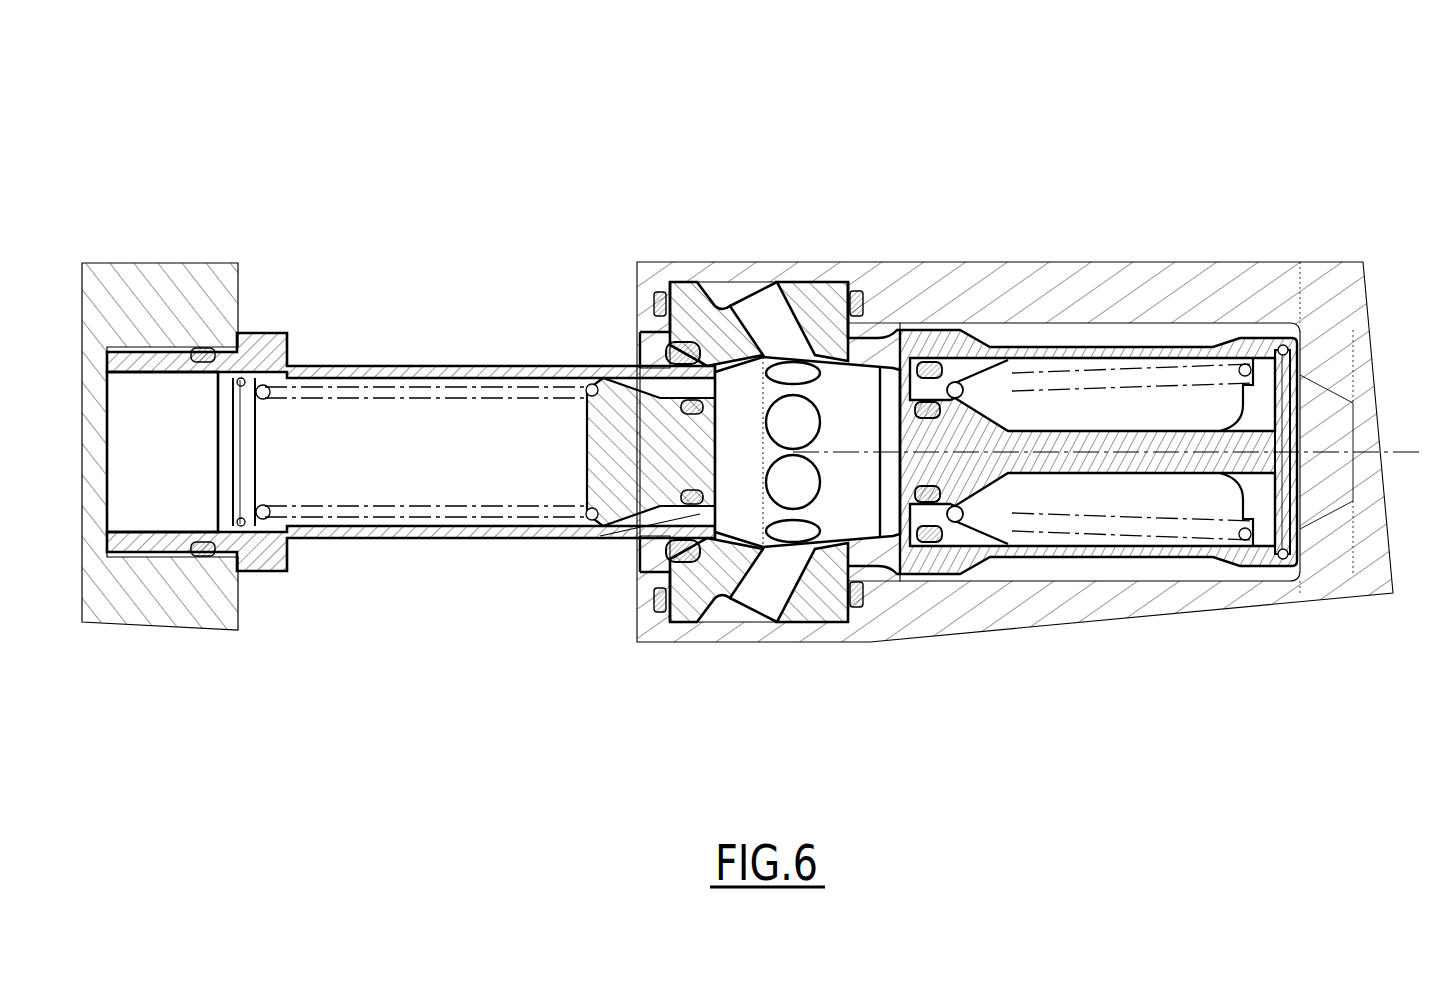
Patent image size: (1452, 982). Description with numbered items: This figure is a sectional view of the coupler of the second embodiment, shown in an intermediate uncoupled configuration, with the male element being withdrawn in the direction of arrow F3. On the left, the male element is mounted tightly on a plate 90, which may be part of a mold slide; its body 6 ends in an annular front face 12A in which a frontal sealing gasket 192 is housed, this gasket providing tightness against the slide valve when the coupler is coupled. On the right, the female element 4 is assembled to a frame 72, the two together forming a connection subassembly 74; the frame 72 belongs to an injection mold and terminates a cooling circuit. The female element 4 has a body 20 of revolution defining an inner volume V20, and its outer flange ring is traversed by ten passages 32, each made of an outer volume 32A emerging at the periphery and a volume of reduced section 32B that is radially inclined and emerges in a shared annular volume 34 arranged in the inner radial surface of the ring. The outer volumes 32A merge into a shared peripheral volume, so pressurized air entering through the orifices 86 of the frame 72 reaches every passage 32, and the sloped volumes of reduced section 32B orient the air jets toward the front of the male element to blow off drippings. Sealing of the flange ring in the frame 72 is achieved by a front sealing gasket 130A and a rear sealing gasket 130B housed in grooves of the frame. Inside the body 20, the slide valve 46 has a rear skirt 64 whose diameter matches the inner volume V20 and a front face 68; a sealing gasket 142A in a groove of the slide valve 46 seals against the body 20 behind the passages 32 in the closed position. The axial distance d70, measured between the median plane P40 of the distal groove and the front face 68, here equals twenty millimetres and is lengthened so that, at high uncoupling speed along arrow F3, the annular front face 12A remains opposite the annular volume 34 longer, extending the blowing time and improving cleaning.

The plate 90 is at (163, 332).
The annular front face 12A is at (745, 622).
The body 6 is at (405, 540).
The frontal sealing gasket 192 is at (600, 537).
The passages 32 is at (800, 390).
The outer volume 32A is at (722, 290).
The volume of reduced section 32B is at (775, 318).
The annular volume 34 is at (855, 375).
The front sealing gasket 130A is at (652, 300).
The rear sealing gasket 130B is at (862, 298).
The front face 68 is at (868, 336).
The body 20 is at (1167, 345).
The slide valve 46 is at (918, 355).
The sealing gasket 142A is at (948, 380).
The rear skirt 64 is at (992, 345).
The female element 4 is at (1250, 318).
The connection subassembly 74 is at (1380, 98).
The frame 72 is at (1343, 310).
The inner volume V20 is at (1120, 418).
The orifices 86 is at (727, 250).
The median plane of the distal groove P40 is at (684, 55).
The axial distance d70 is at (900, 262).
The arrow F3 is at (393, 326).